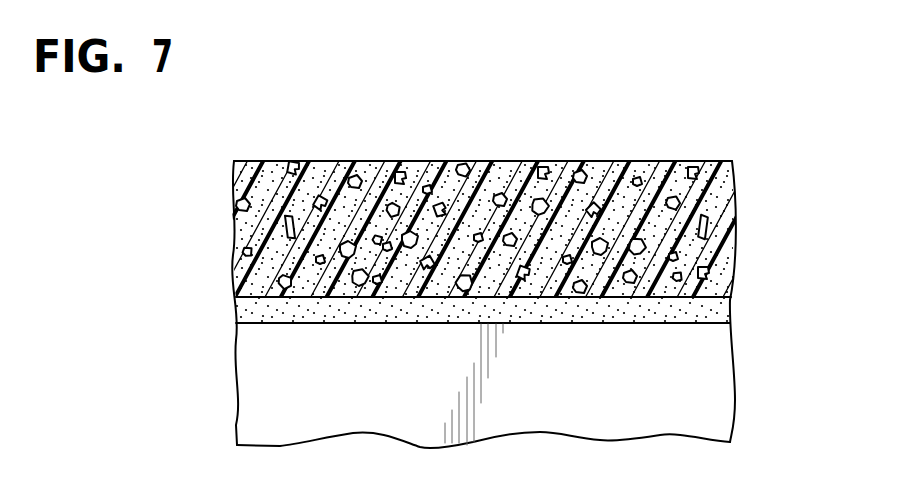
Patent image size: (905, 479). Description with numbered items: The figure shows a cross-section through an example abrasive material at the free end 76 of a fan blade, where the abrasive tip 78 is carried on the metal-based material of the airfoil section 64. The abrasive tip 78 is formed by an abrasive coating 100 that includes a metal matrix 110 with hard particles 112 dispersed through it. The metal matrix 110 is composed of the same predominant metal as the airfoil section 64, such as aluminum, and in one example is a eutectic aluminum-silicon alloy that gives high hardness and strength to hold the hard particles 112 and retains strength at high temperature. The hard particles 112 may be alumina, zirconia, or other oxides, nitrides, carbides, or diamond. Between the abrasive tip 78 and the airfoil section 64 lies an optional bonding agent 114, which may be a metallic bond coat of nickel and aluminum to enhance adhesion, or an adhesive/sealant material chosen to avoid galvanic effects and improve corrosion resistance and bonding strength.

The airfoil section 64 is at (540, 389).
The free end 76 is at (455, 191).
The abrasive tip 78 is at (282, 172).
The abrasive coating 100 is at (467, 216).
The metal matrix 110 is at (712, 163).
The hard particles 112 is at (481, 236).
The bonding agent 114 is at (718, 302).